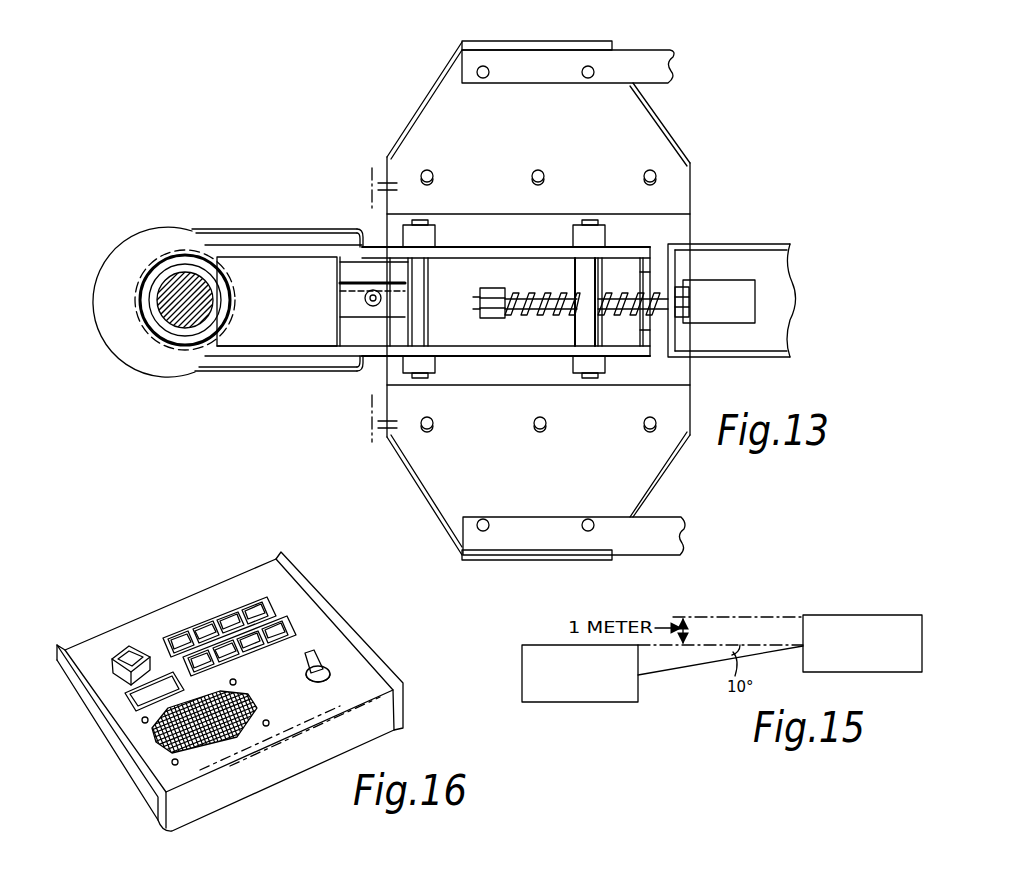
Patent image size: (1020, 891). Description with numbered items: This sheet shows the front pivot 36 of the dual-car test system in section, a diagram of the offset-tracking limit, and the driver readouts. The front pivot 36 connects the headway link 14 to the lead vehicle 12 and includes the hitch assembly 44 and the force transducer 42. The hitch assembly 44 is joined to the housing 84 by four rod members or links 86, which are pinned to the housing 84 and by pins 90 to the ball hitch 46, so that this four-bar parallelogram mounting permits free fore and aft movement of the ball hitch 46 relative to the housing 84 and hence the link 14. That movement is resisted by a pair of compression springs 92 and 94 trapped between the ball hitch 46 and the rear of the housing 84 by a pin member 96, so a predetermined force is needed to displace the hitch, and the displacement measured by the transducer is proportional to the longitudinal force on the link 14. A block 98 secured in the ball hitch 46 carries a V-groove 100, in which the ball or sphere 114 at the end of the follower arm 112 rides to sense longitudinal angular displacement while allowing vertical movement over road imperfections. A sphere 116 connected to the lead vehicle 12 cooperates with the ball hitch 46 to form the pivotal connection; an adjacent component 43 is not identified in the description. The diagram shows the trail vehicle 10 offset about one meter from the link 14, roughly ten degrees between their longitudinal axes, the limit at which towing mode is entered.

In FIG. 15, the trail vehicle 10 is at (851, 630).
In FIG. 15, the lead vehicle 12 is at (590, 696).
In FIG. 13, the link 14 is at (670, 45).
In FIG. 15, the link 14 is at (677, 673).
In FIG. 13, the front pivot 36 is at (388, 125).
In FIG. 13, the force transducer 42 is at (774, 268).
In FIG. 13, the bracket block 43 is at (748, 303).
In FIG. 13, the hitch assembly 44 is at (190, 385).
In FIG. 13, the ball hitch 46 is at (132, 236).
In FIG. 13, the housing 84 is at (690, 200).
In FIG. 13, the rod members or links 86 is at (432, 378).
In FIG. 13, the pins 90 is at (430, 318).
In FIG. 13, the compression spring 92 is at (610, 292).
In FIG. 13, the compression spring 94 is at (533, 290).
In FIG. 13, the pin member 96 is at (693, 304).
In FIG. 13, the block 98 is at (350, 327).
In FIG. 13, the V-groove 100 is at (346, 294).
In FIG. 13, the follower arm 112 is at (403, 292).
In FIG. 13, the ball or sphere 114 is at (370, 306).
In FIG. 13, the sphere 116 is at (189, 260).